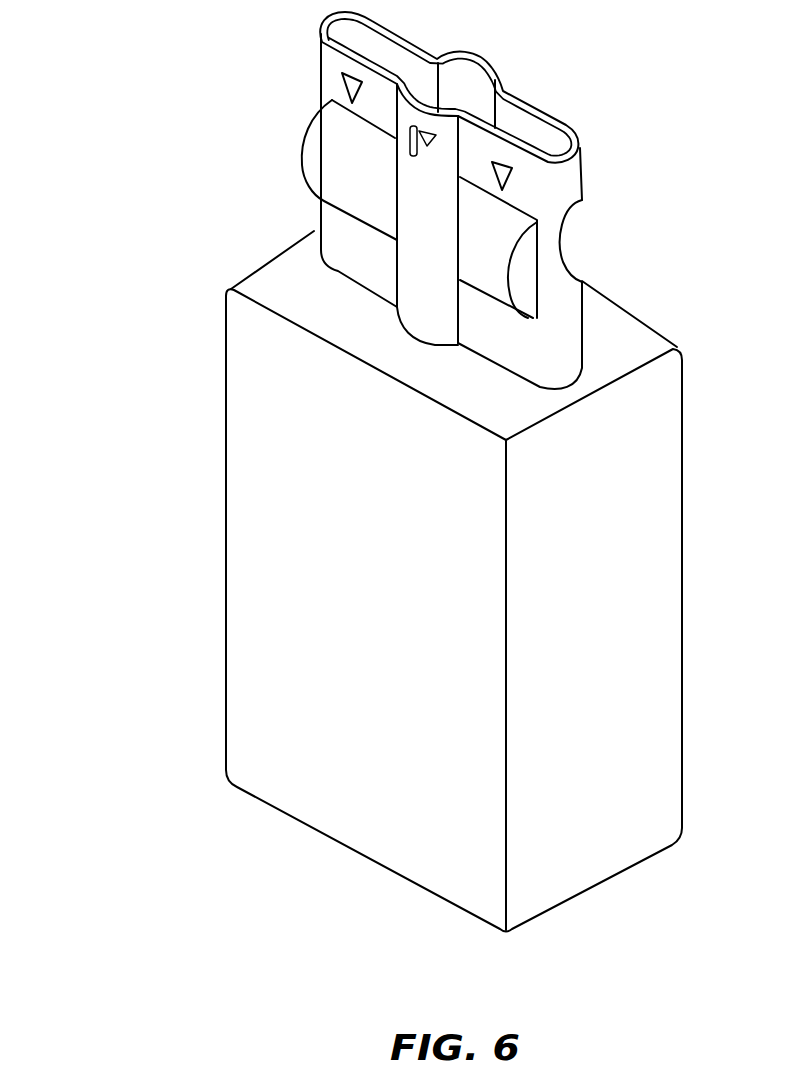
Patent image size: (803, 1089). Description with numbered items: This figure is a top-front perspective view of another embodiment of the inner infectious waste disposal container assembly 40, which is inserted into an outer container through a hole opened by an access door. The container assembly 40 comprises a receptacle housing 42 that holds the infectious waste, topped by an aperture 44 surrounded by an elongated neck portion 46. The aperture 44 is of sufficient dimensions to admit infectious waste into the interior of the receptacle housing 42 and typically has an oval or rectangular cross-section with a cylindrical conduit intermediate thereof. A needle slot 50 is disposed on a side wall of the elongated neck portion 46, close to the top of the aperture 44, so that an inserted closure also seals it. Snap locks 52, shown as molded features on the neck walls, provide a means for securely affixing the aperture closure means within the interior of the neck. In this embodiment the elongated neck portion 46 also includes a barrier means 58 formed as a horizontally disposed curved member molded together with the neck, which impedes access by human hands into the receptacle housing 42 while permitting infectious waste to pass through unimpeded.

The infectious waste disposal container assembly 40 is at (185, 613).
The receptacle housing 42 is at (380, 645).
The aperture 44 is at (535, 126).
The elongated neck portion 46 is at (580, 154).
The needle slot 50 is at (574, 191).
The snap locks 52 is at (340, 80).
The barrier means 58 is at (561, 248).